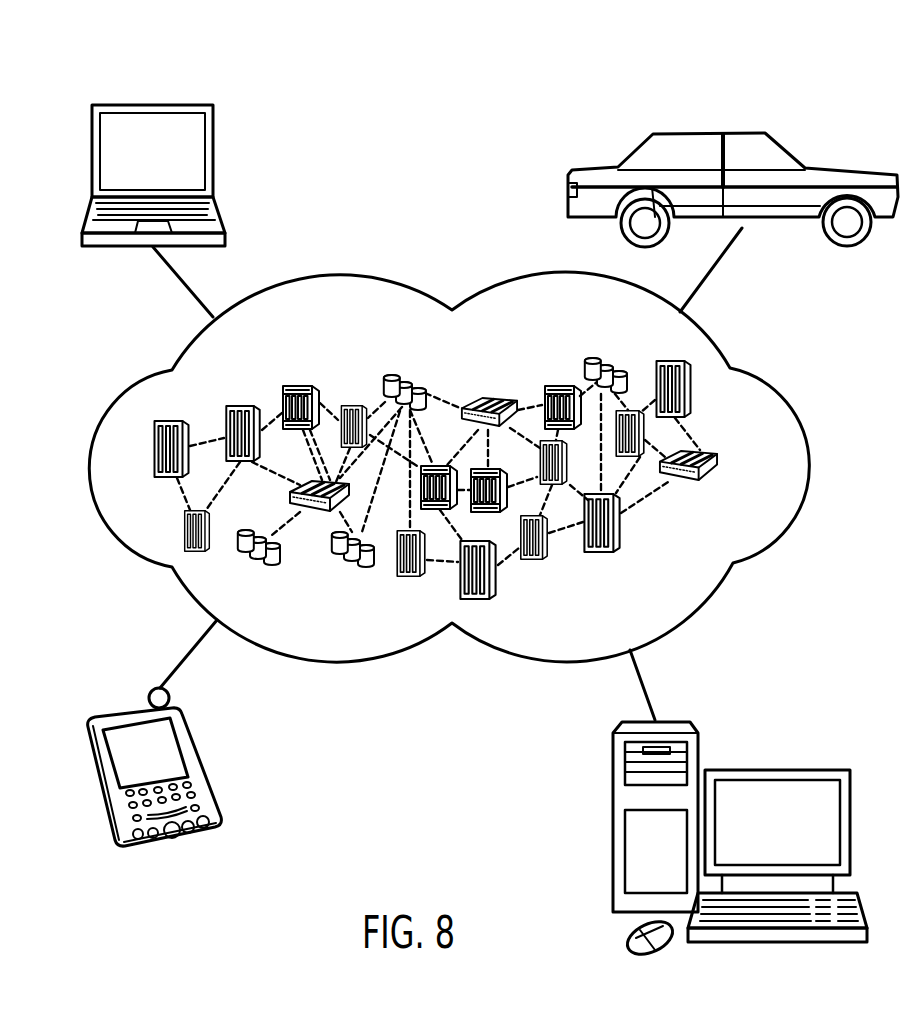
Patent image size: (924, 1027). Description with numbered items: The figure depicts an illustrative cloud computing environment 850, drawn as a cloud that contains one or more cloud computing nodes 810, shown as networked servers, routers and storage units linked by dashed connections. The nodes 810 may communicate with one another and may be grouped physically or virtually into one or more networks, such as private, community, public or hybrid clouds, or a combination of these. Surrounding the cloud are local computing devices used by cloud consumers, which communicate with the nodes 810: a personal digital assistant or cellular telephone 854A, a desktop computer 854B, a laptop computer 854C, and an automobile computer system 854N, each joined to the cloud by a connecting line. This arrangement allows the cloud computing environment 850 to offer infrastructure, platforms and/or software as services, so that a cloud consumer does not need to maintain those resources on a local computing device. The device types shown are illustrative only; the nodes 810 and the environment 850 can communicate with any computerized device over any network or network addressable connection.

The cloud computing environment 850 is at (790, 377).
The cloud computing node 810 is at (727, 467).
The personal digital assistant (PDA) or cellular telephone 854A is at (132, 707).
The desktop computer 854B is at (777, 768).
The laptop computer 854C is at (153, 103).
The automobile computer system 854N is at (713, 137).